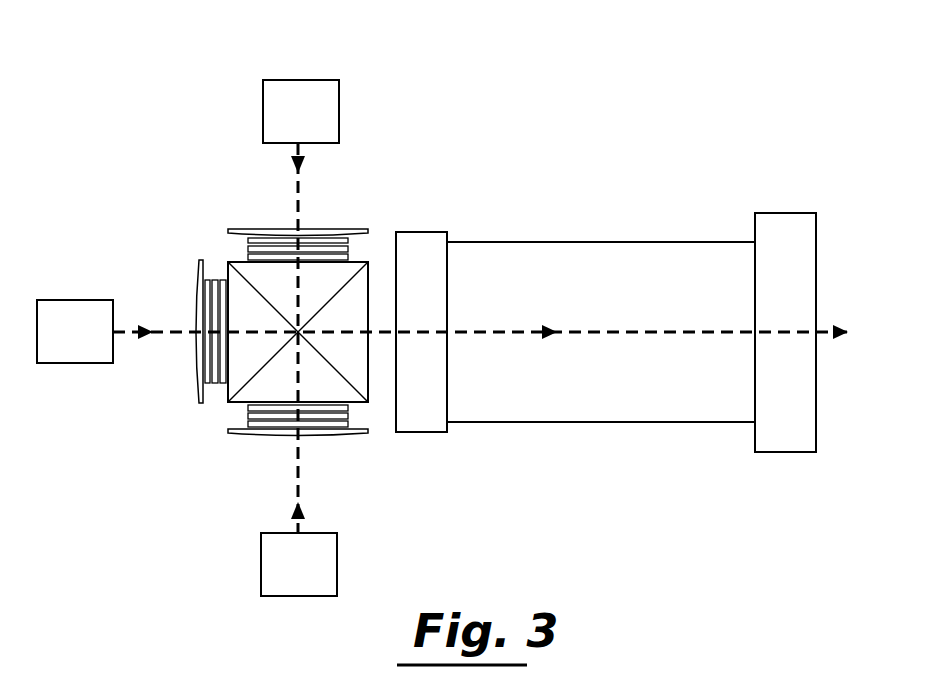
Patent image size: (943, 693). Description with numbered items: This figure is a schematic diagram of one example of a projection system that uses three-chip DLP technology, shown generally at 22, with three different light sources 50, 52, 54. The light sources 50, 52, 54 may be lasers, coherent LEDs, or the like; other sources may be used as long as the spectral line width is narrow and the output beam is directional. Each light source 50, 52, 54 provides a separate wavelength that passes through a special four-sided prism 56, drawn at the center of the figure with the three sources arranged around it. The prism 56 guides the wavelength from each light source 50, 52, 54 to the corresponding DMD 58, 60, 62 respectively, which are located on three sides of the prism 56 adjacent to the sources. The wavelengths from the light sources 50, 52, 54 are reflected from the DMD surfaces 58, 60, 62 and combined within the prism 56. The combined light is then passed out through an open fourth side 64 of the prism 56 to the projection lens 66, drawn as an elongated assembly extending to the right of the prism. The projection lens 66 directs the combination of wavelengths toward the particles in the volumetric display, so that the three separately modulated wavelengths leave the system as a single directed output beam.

The optical assembly 22 is at (118, 154).
The light source 50 is at (305, 80).
The light source 52 is at (68, 363).
The light source 54 is at (297, 597).
The four-sided prism 56 is at (238, 278).
The DMD 58 is at (270, 228).
The DMD 60 is at (195, 372).
The DMD 62 is at (317, 440).
The open fourth side 64 is at (368, 378).
The projection lens 66 is at (558, 240).